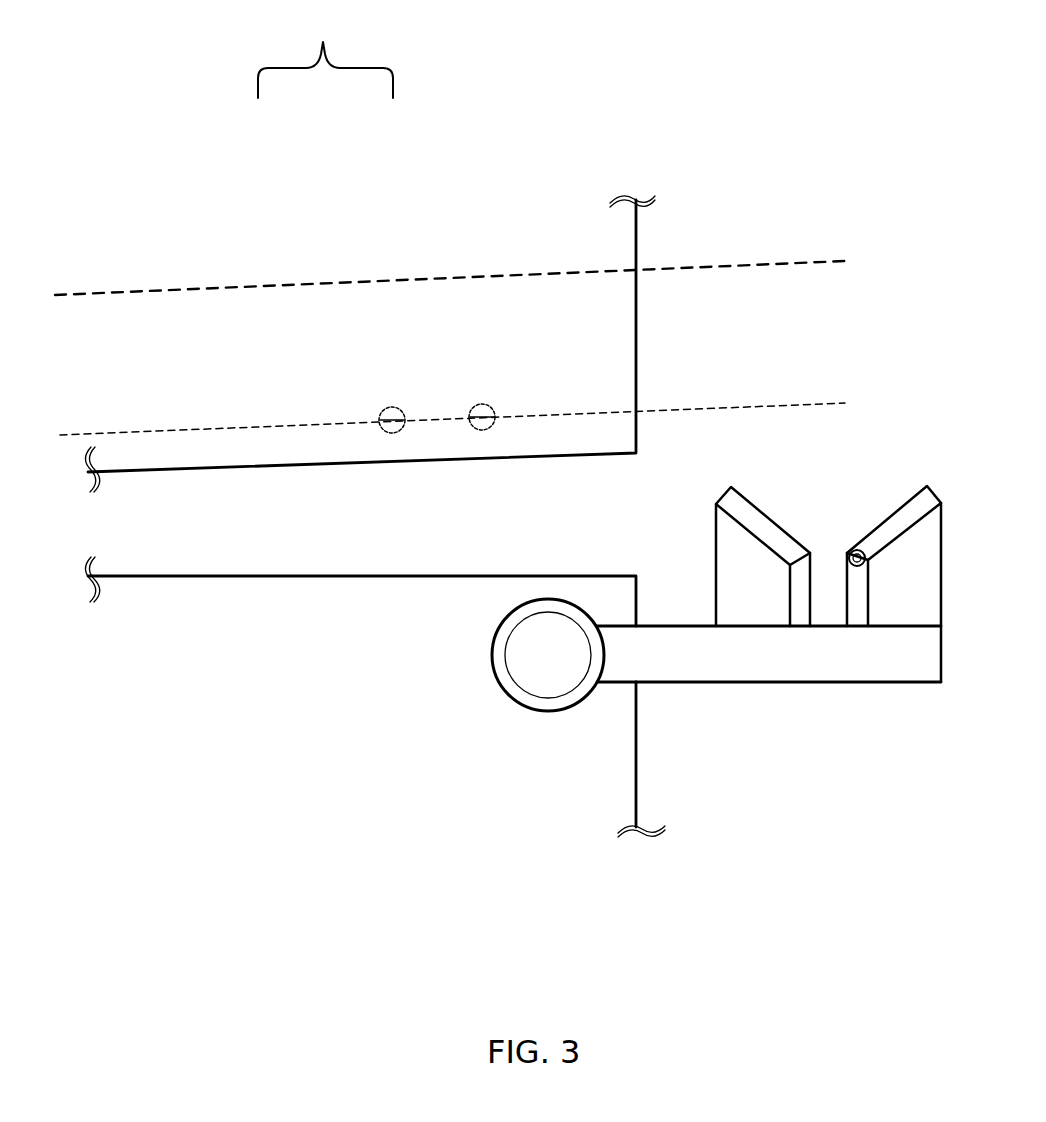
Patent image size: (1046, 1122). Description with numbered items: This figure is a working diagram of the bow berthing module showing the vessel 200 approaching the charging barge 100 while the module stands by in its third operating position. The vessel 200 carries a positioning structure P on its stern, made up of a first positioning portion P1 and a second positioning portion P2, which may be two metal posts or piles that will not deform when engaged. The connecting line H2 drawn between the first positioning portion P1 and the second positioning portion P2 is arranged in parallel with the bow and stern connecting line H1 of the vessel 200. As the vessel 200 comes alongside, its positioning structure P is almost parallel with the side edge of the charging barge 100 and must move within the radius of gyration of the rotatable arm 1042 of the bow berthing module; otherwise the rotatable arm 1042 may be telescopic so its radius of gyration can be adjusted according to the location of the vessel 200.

The positioning structure P is at (325, 51).
The first positioning portion P1 is at (482, 417).
The second positioning portion P2 is at (392, 420).
The vessel 200 is at (371, 344).
The bow and stern connecting line H1 is at (475, 272).
The connecting line H2 is at (478, 411).
The charging barge 100 is at (376, 697).
The rotatable arm 1042 is at (765, 675).